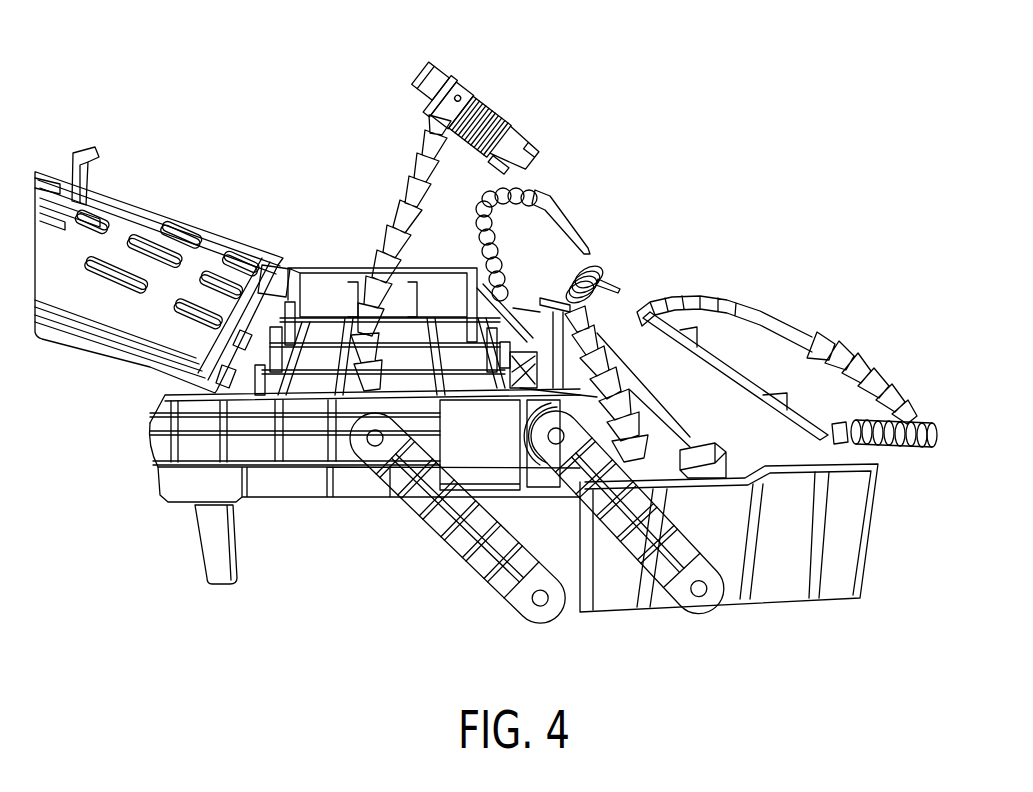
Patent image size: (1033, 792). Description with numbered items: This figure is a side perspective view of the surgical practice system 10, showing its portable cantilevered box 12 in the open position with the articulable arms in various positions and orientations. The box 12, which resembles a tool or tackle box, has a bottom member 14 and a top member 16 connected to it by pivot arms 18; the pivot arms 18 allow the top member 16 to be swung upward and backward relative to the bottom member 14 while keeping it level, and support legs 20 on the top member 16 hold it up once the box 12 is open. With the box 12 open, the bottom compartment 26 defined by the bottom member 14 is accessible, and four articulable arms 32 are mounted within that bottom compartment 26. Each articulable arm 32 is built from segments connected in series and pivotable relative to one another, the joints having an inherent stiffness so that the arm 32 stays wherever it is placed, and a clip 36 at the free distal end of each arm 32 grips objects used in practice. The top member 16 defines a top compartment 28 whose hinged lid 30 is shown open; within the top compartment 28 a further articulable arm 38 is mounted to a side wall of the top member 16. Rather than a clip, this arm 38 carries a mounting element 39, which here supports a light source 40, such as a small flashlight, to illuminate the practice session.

The surgical practice system 10 is at (828, 232).
The portable cantilevered box 12 is at (873, 525).
The bottom member 14 is at (850, 590).
The top member 16 is at (160, 490).
The pivot arms 18 is at (695, 590).
The support legs 20 is at (230, 540).
The bottom compartment 26 is at (745, 370).
The top compartment 28 is at (420, 260).
The hinged lid 30 is at (95, 355).
The articulable arm 32 is at (475, 187).
The clip 36 is at (585, 233).
The further articulable arm 38 is at (382, 182).
The mounting element 39 is at (470, 75).
The light source 40 is at (510, 100).